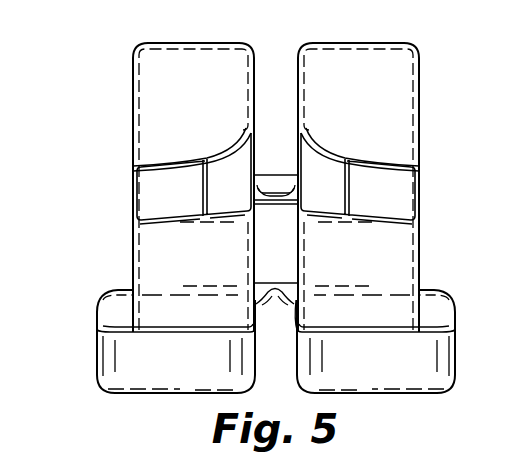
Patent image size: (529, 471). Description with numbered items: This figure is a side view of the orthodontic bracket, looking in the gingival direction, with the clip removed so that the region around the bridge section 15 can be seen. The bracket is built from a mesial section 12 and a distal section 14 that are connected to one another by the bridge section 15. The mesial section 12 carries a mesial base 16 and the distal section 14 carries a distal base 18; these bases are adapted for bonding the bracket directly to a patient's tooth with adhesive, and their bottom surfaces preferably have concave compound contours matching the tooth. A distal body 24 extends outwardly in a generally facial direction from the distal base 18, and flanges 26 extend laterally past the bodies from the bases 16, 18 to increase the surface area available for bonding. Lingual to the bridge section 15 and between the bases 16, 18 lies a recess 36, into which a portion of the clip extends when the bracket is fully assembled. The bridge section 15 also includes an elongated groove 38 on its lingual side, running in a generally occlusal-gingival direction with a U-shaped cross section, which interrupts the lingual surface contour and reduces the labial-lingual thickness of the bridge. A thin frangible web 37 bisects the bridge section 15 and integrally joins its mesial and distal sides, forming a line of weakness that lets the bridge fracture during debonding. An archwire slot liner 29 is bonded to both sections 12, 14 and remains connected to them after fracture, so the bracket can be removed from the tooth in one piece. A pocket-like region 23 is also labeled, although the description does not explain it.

The mesial section 12 is at (430, 232).
The distal section 14 is at (122, 225).
The bridge section 15 is at (285, 168).
The mesial base 16 is at (455, 345).
The distal base 18 is at (97, 350).
The pocket 23 is at (168, 190).
The distal body 24 is at (133, 257).
The flanges 26 is at (120, 307).
The archwire slot liner 29 is at (263, 185).
The recess 36 is at (297, 320).
The frangible web 37 is at (272, 192).
The elongated groove 38 is at (275, 293).